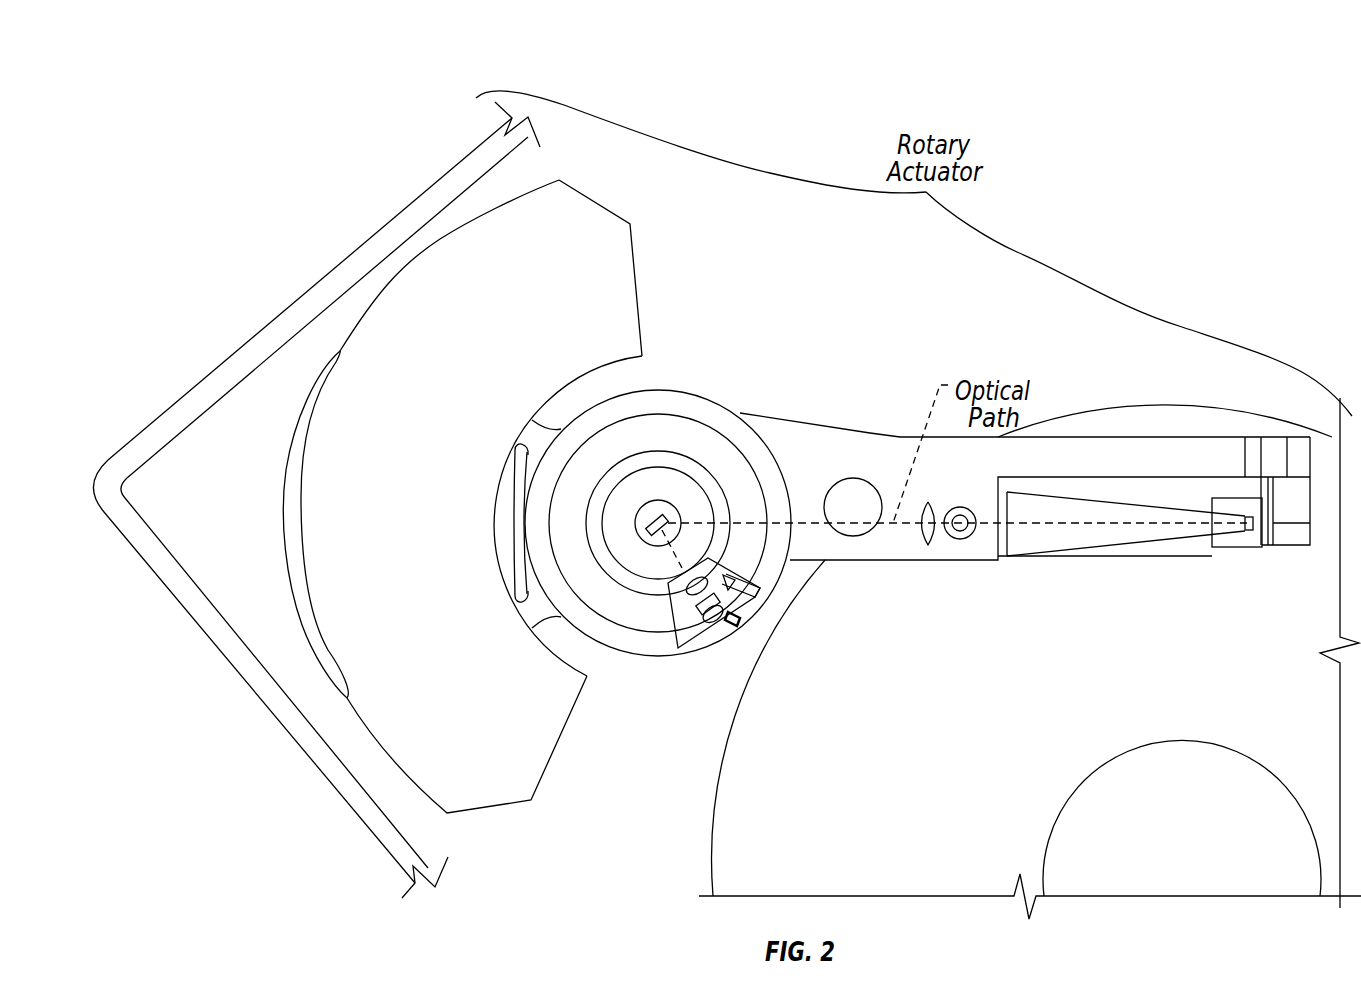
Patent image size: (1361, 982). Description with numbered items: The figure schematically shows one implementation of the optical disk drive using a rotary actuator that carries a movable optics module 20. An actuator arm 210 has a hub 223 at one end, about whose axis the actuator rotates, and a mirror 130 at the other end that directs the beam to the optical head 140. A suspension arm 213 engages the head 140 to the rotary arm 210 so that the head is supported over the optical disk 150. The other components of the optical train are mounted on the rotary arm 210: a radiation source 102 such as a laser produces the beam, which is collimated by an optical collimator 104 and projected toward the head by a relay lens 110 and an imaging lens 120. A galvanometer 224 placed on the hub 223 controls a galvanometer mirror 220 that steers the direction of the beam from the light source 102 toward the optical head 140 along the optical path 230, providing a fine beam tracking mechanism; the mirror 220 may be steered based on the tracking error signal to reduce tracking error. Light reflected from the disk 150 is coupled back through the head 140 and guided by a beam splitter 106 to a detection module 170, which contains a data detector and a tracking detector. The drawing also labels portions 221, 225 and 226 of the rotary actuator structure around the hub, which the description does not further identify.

The rotary actuator housing arm 221 is at (386, 323).
The rotary actuator housing arm 226 is at (282, 705).
The flexure 225 is at (288, 511).
The hub 223 is at (603, 413).
The galvanometer 224 is at (693, 487).
The galvanometer mirror 220 is at (666, 512).
The actuator arm 210 is at (870, 433).
The imaging lens 120 is at (936, 540).
The optical path 230 is at (672, 549).
The suspension arm 213 is at (1040, 545).
The optical head 140 is at (1237, 543).
The mirror 130 is at (1263, 540).
The optics module 20 is at (735, 608).
The detection module 170 is at (741, 584).
The relay lens 110 is at (689, 590).
The beam splitter 106 is at (697, 609).
The optical collimator 104 is at (710, 622).
The radiation source 102 is at (731, 629).
The optical disk 150 is at (712, 880).